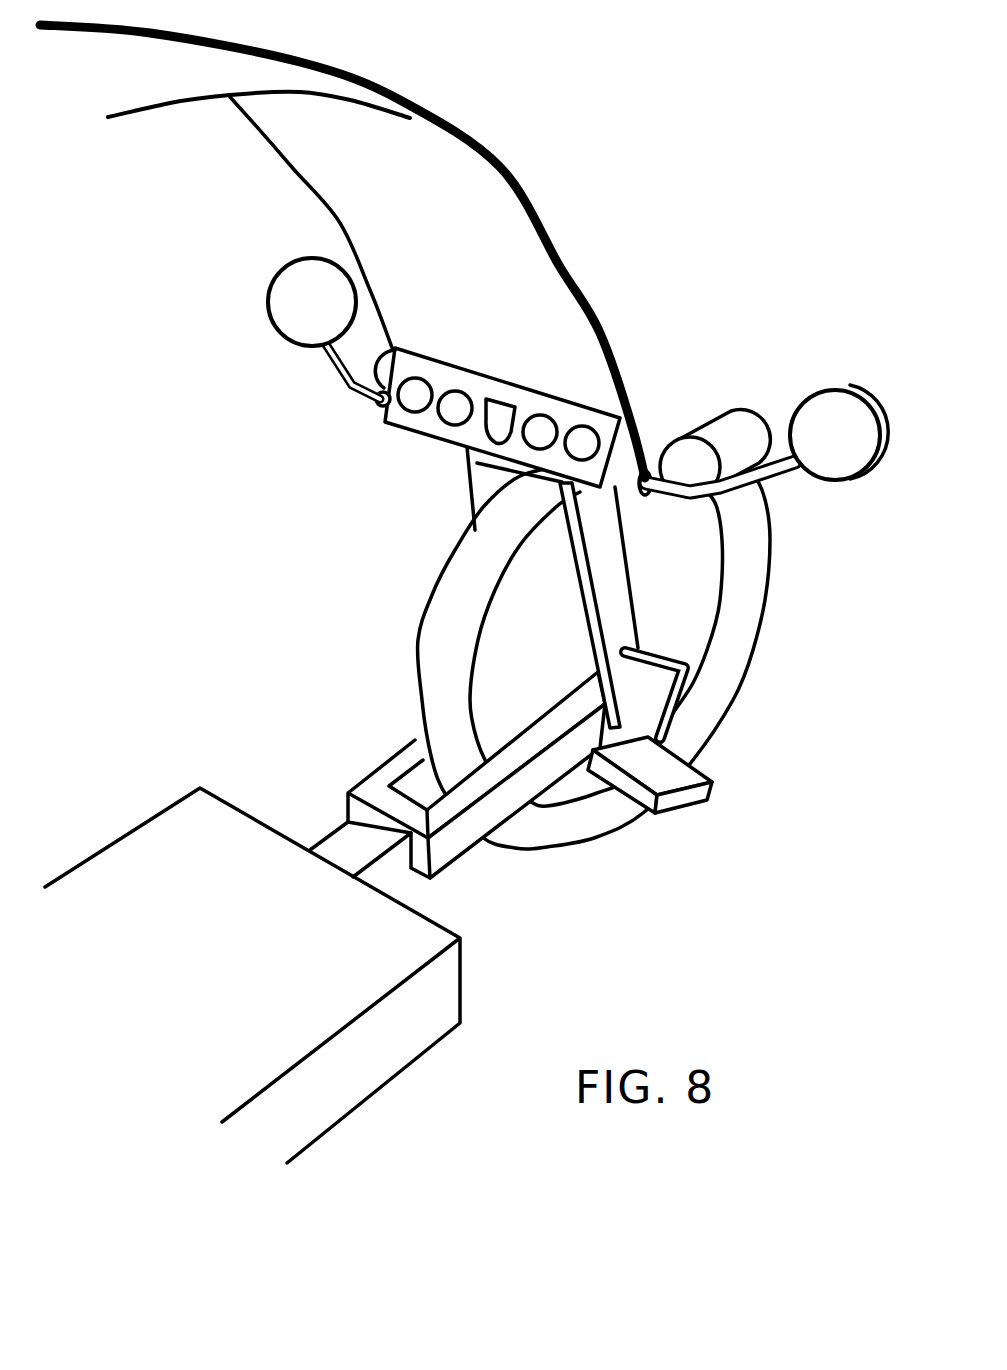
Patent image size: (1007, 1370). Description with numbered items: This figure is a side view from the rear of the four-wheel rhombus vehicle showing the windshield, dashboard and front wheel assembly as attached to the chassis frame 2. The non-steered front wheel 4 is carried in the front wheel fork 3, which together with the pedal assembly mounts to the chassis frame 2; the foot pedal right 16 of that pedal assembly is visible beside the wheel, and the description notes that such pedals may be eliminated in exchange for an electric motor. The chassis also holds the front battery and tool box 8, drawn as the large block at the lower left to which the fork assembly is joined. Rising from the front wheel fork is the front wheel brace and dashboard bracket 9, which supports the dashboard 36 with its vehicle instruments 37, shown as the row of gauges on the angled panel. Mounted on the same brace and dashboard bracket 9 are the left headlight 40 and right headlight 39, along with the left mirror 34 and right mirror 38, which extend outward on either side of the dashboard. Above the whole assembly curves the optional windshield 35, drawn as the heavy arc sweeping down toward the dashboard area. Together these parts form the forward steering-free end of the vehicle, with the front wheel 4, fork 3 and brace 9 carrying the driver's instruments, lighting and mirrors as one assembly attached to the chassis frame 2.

The chassis frame 2 is at (352, 833).
The front wheel fork 3 is at (468, 840).
The non-steered front wheel 4 is at (762, 632).
The front battery and tool box 8 is at (130, 853).
The front wheel brace and dashboard bracket 9 is at (622, 598).
The foot pedal right 16 is at (710, 790).
The left mirror 34 is at (278, 327).
The windshield 35 is at (502, 168).
The dashboard 36 is at (457, 447).
The vehicle instruments 37 is at (407, 413).
The right mirror 38 is at (807, 403).
The right headlight 39 is at (700, 433).
The left headlight 40 is at (350, 400).